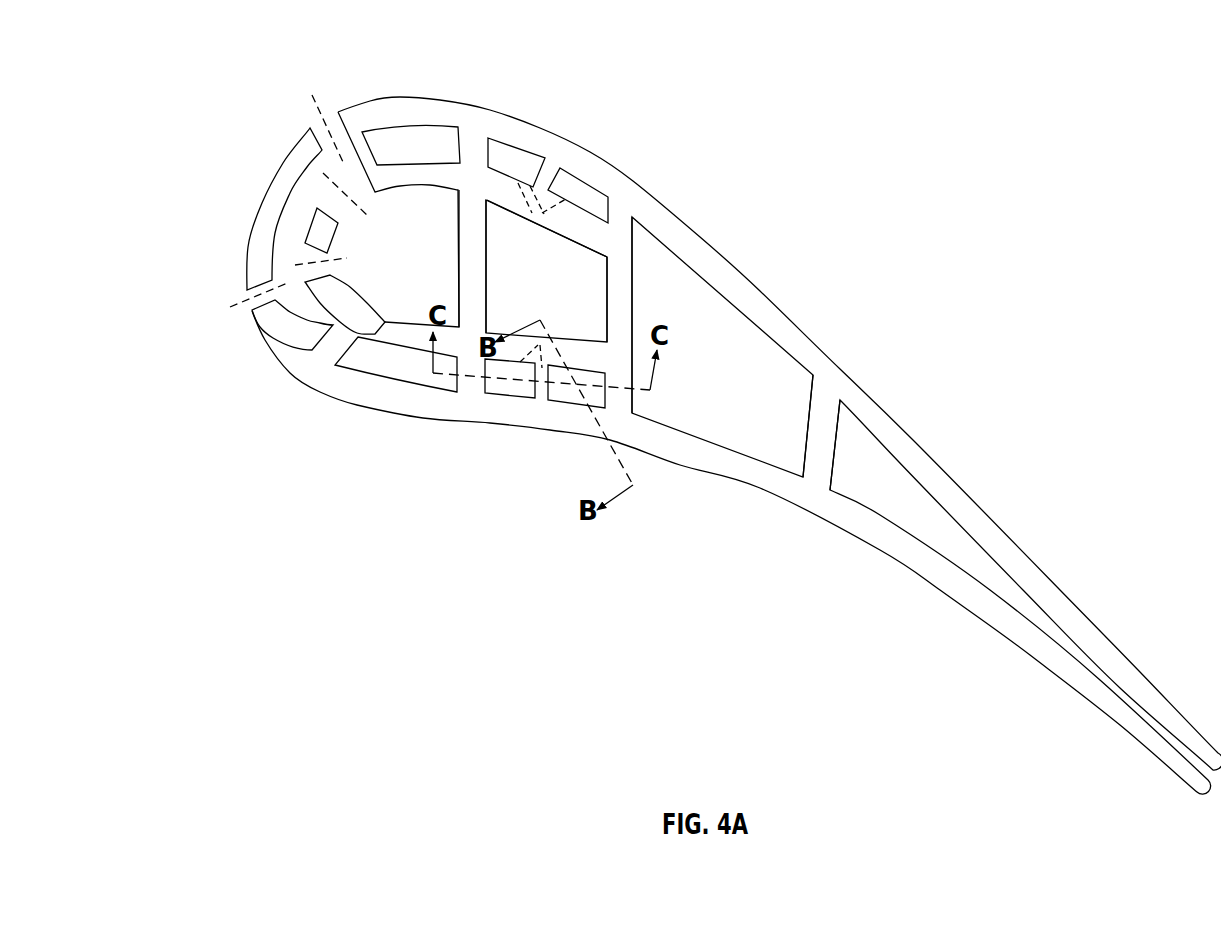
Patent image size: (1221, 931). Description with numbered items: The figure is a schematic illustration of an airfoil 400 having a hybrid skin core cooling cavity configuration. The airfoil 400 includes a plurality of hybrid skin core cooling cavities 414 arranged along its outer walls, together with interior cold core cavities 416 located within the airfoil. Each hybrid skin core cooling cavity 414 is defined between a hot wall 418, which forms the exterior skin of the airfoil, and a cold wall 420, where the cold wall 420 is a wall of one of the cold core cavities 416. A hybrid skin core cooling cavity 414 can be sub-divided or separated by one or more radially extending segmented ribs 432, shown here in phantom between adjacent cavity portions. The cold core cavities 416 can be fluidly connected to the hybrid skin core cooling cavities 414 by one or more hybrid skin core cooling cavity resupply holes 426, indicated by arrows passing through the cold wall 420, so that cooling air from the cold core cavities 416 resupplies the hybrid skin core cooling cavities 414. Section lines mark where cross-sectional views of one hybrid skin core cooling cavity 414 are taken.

The airfoil 400 is at (932, 107).
The hybrid skin core cooling cavity 414 is at (310, 200).
The interior cold core cavity 416 is at (416, 254).
The hot wall 418 is at (502, 118).
The cold wall 420 is at (420, 177).
The hybrid skin core cooling cavity resupply hole 426 is at (570, 222).
The radially extending segmented rib 432 is at (545, 175).